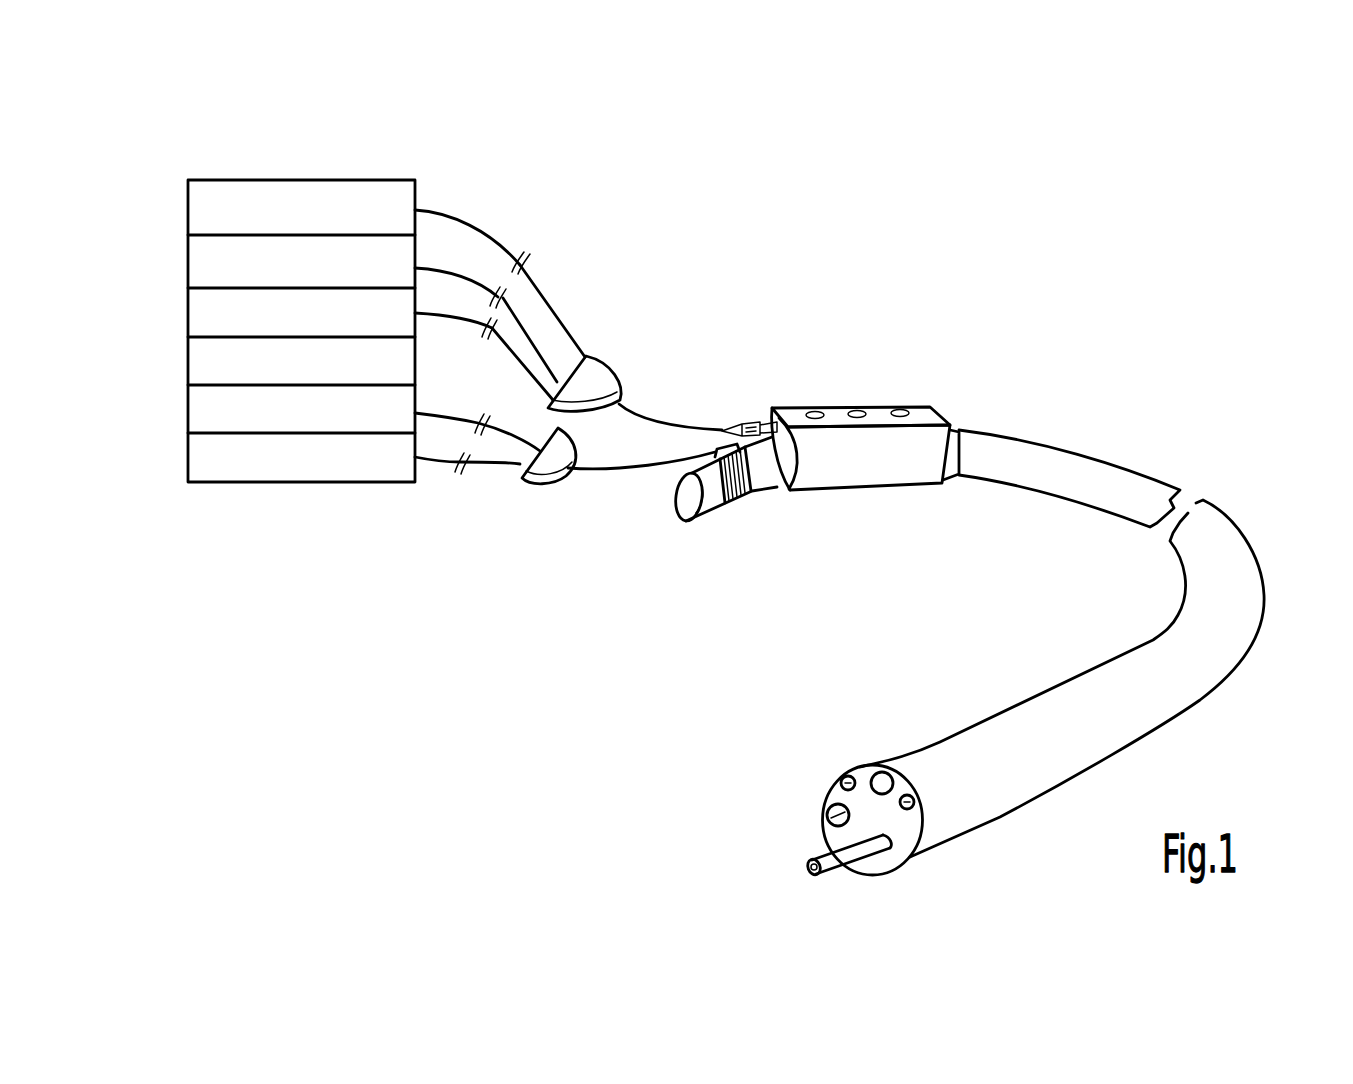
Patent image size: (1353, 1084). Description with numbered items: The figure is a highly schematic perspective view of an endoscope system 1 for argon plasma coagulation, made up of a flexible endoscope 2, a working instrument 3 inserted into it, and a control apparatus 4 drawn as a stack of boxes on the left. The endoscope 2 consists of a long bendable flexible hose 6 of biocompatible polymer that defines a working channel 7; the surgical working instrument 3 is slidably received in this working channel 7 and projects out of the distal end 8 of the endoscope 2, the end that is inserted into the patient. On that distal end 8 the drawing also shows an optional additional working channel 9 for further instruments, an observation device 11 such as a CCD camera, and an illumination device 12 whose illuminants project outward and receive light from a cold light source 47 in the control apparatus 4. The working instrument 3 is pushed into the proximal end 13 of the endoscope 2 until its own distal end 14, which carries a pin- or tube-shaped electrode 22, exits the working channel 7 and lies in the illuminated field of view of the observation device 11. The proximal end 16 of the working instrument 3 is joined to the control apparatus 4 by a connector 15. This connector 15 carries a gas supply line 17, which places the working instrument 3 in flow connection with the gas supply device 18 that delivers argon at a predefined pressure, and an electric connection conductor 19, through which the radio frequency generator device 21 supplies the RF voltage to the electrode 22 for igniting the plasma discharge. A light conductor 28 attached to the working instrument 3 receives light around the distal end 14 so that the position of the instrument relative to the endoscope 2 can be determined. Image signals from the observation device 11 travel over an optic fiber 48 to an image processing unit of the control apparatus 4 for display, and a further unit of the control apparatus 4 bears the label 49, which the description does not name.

The endoscope system 1 is at (1040, 320).
The flexible endoscope 2 is at (1045, 643).
The working instrument 3 is at (815, 813).
The control apparatus 4 is at (300, 266).
The flexible hose 6 is at (1170, 686).
The working channel 7 is at (893, 868).
The distal end 8 is at (865, 862).
The additional working channel 9 is at (826, 810).
The observation device 11 is at (882, 772).
The illumination device 12 is at (840, 777).
The proximal end 13 is at (749, 393).
The distal end 14 is at (832, 873).
The connector 15 is at (590, 385).
The proximal end 16 is at (635, 334).
The gas supply line 17 is at (558, 313).
The gas supply device 18 is at (283, 228).
The electric connection conductor 19 is at (483, 283).
The radio frequency generator device 21 is at (283, 281).
The electrode 22 is at (807, 867).
The light conductor 28 is at (458, 310).
The cold light source 47 is at (283, 426).
The optic fiber 48 is at (517, 463).
The pump 49 is at (283, 474).